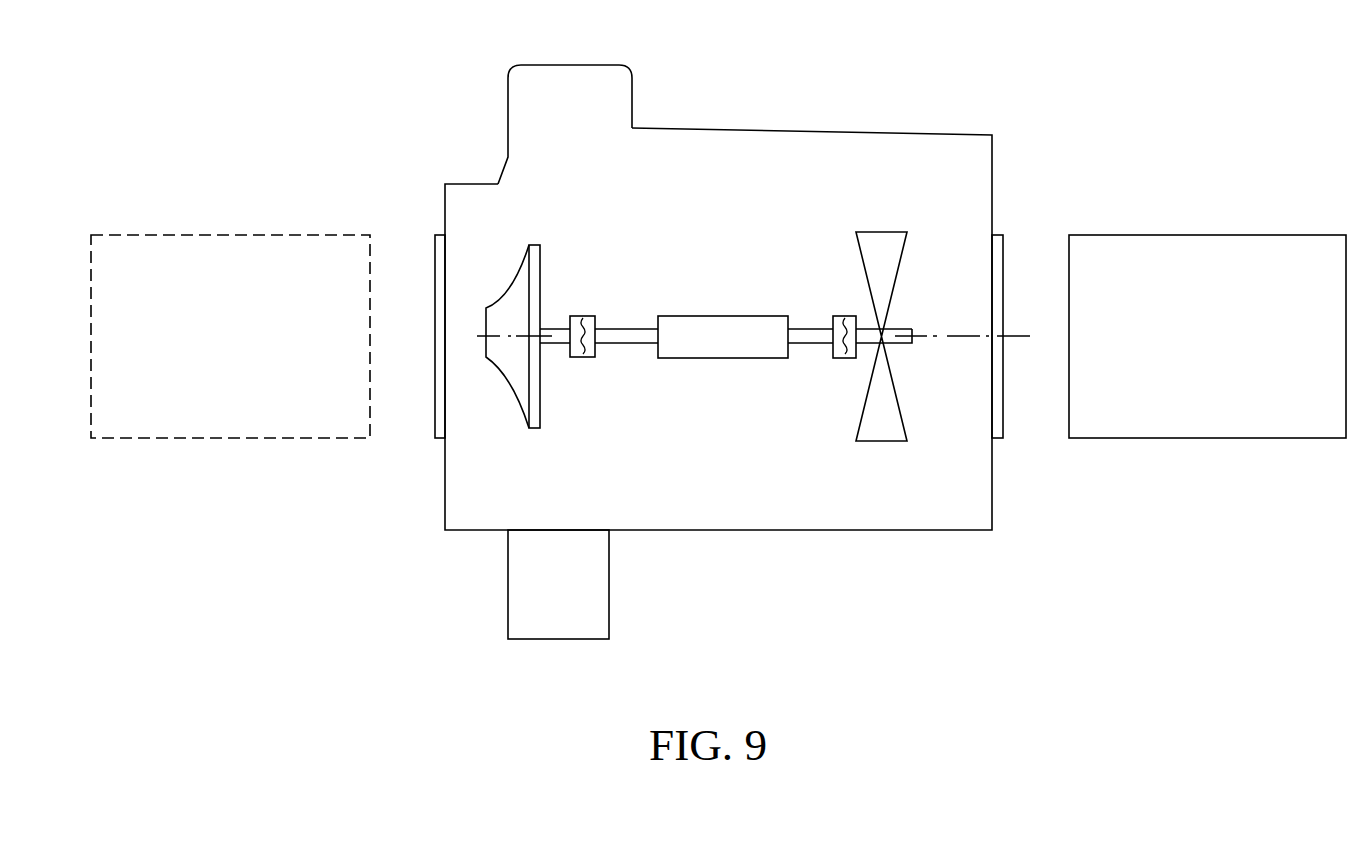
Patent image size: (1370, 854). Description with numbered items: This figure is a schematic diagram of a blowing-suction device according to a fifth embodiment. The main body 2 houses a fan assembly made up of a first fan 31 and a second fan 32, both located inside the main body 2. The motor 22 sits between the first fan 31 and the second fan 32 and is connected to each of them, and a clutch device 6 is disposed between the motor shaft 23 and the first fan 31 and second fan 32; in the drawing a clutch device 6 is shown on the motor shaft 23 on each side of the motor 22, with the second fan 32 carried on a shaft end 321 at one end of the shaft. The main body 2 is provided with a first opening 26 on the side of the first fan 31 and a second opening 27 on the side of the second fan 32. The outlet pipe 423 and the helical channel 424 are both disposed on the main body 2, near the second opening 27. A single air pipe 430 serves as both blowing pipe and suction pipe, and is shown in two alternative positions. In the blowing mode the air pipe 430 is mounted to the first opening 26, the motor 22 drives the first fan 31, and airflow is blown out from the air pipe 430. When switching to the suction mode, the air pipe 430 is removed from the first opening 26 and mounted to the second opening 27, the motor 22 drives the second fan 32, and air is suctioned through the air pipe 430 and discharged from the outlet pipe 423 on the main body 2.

The main body 2 is at (896, 132).
The helical channel 424 is at (573, 87).
The outlet pipe 423 is at (557, 622).
The second opening 27 is at (440, 305).
The first opening 26 is at (998, 308).
The air pipe 430 is at (276, 300).
The second fan 32 is at (535, 268).
The impeller shaft end 321 is at (555, 333).
The motor shaft 23 is at (638, 341).
The clutch device 6 is at (588, 357).
The motor 22 is at (745, 354).
The first fan 31 is at (883, 420).